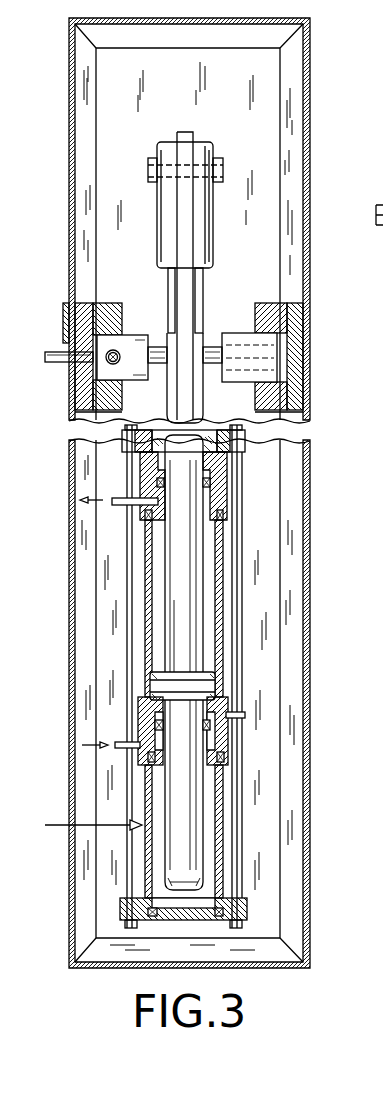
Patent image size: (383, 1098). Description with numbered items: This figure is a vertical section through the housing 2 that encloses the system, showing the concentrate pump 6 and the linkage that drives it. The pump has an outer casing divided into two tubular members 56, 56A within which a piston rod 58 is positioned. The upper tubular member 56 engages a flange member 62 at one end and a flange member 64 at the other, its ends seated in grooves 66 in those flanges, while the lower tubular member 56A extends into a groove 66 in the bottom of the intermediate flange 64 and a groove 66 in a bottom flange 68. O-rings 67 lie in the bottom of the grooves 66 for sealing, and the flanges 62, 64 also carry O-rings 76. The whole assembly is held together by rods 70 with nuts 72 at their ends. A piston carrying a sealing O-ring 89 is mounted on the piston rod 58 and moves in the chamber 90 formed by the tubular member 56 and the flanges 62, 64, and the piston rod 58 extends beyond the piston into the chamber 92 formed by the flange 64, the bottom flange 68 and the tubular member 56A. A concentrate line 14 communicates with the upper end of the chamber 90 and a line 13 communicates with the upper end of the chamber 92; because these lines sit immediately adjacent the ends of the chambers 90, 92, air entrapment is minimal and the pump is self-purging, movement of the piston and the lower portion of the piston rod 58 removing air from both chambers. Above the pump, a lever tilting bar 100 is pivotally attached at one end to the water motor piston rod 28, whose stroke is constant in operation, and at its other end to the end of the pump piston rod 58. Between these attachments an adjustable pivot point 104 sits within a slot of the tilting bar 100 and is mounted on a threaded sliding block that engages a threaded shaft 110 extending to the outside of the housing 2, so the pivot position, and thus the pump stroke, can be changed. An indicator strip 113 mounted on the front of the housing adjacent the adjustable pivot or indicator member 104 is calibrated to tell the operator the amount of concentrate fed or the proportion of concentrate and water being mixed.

The housing 2 is at (62, 131).
The concentrate pump 6 is at (82, 827).
The concentrate line 13 is at (136, 746).
The concentrate line 14 is at (112, 505).
The piston rod 28 is at (199, 282).
The tubular member 56 is at (223, 589).
The tubular member 56A is at (223, 793).
The piston rod 58 is at (200, 345).
The flange member 62 is at (215, 488).
The flange member 64 is at (224, 747).
The grooves 66 is at (222, 912).
The O-rings 67 is at (222, 513).
The bottom flange 68 is at (247, 912).
The rods 70 is at (127, 635).
The nuts 72 is at (237, 426).
The O-rings 76 is at (138, 726).
The sealing O-ring 89 is at (142, 686).
The chamber 90 is at (207, 502).
The chamber 92 is at (212, 742).
The lever tilting bar 100 is at (190, 228).
The adjustable pivot point 104 is at (50, 363).
The threaded shaft 110 is at (114, 350).
The indicator strip 113 is at (63, 323).